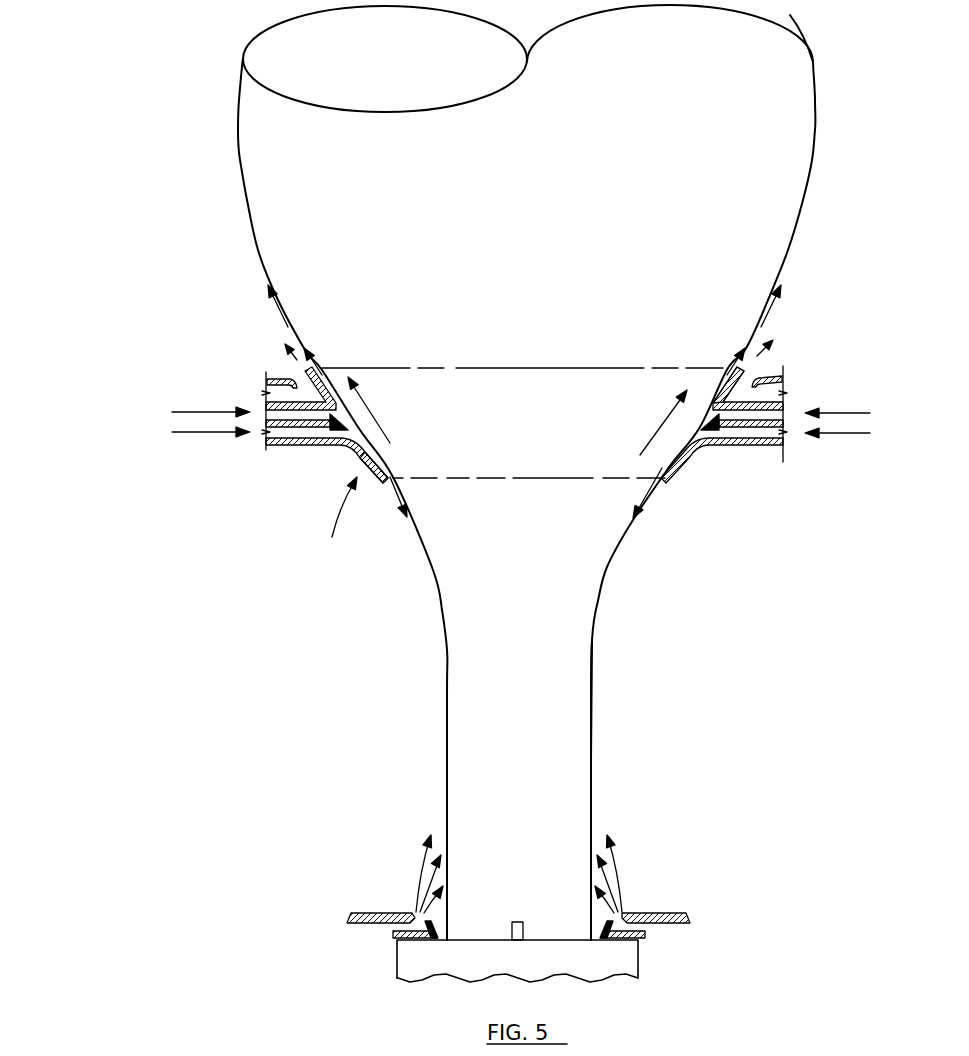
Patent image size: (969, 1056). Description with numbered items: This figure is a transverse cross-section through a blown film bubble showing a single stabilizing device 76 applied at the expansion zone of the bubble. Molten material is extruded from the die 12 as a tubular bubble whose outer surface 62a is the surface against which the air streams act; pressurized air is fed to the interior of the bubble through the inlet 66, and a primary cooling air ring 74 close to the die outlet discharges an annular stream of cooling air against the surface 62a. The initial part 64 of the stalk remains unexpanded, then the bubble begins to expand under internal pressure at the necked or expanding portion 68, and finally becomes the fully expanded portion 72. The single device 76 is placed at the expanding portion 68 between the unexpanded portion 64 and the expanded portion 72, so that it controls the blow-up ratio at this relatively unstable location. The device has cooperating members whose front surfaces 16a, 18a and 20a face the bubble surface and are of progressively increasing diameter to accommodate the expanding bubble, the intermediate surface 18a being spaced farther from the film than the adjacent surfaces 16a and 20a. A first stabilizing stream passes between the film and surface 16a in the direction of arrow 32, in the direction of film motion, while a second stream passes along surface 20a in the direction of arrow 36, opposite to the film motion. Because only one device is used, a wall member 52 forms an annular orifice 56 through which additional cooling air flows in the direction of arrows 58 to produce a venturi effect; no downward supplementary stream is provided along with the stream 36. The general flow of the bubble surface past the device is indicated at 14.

The die 12 is at (628, 962).
The flow arrows / combustion gas flow 14 is at (367, 412).
The front surface of first member 16a is at (780, 386).
The front surface of intermediate member 18a is at (331, 432).
The front surface of third member 20a is at (693, 448).
The arrow indicating first stabilizing stream direction 32 is at (733, 363).
The arrow indicating second stabilizing stream direction 36 is at (382, 468).
The wall member 52 is at (773, 378).
The annular air discharge orifice 56 is at (301, 368).
The arrows indicating additional air stream 58 is at (757, 356).
The outer surface of bubble 62a is at (818, 137).
The unexpanded initial part of bubble stalk 64 is at (580, 702).
The air inlet 66 is at (523, 927).
The necked or expanding portion of bubble 68 is at (541, 316).
The fully expanded portion of bubble 72 is at (800, 80).
The primary cooling air ring 74 is at (675, 920).
The stabilizing device 76 is at (337, 519).